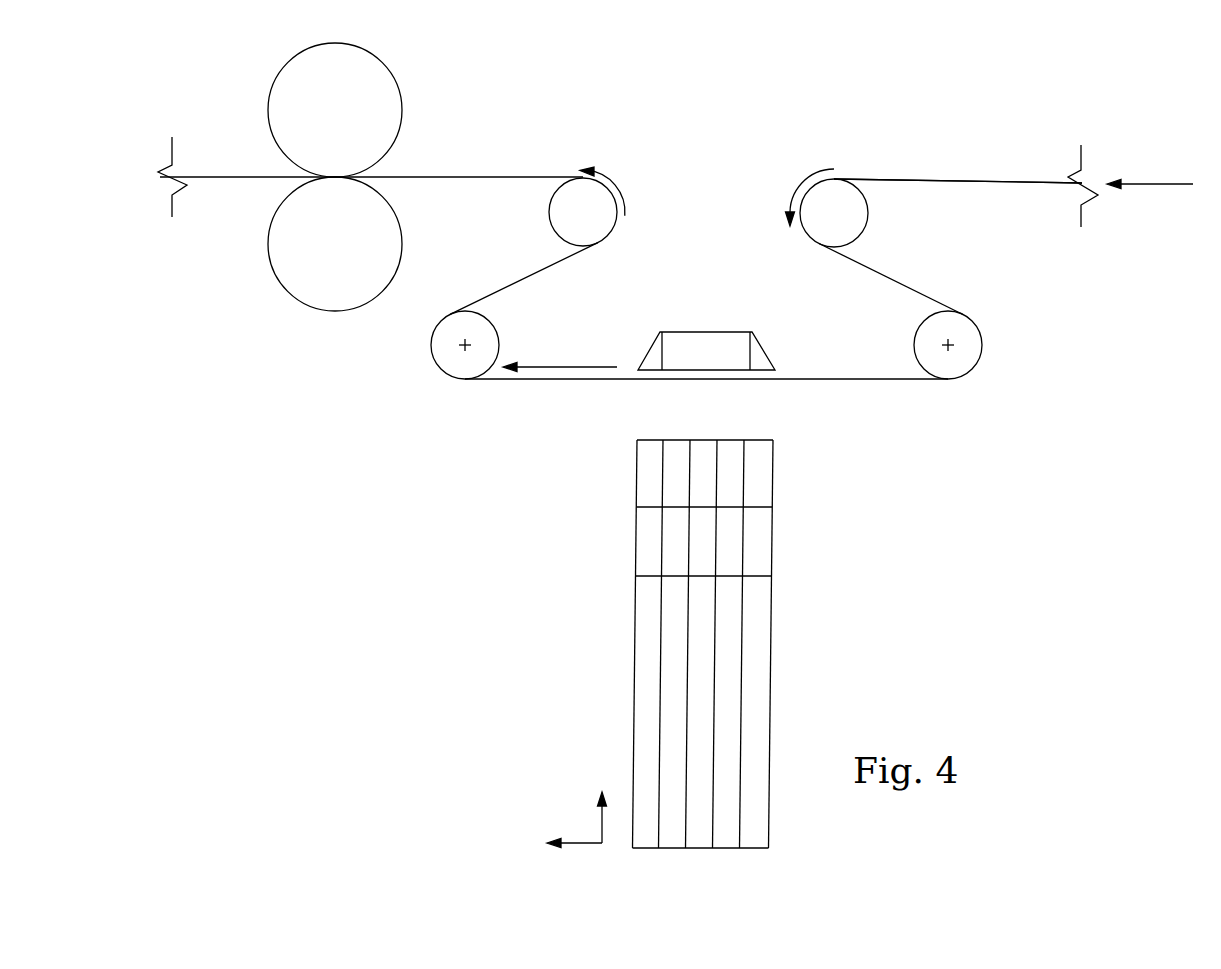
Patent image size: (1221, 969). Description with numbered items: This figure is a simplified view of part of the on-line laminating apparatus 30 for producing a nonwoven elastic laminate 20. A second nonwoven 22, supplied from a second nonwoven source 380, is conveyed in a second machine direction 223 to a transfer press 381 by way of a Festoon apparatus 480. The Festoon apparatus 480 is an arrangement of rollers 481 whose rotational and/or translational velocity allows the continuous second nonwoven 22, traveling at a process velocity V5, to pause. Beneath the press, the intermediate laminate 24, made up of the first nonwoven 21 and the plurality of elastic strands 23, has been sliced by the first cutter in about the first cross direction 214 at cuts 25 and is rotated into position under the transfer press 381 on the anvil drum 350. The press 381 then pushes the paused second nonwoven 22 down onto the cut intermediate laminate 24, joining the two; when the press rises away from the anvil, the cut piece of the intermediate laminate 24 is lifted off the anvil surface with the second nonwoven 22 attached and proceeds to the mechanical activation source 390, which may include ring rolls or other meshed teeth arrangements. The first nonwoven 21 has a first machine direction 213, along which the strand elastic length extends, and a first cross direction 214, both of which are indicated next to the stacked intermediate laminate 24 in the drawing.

The elastomeric nonwoven laminate 20 is at (333, 177).
The mechanical activation source 390 is at (373, 108).
The second nonwoven 22 is at (980, 181).
The rollers 481 is at (570, 223).
The Festoon apparatus 480 is at (675, 293).
The second machine direction 223 is at (560, 357).
The process velocity V5 is at (624, 201).
The second nonwoven source 380 is at (949, 106).
The transfer press 381 is at (697, 342).
The first nonwoven 21 is at (671, 638).
The elastic strands 23 is at (690, 645).
The intermediate laminate 24 is at (795, 458).
The cuts 25 is at (762, 508).
The apparatus 30 is at (748, 638).
The anvil drum 350 is at (598, 587).
The first machine direction 213 is at (605, 802).
The first cross direction 214 is at (552, 846).